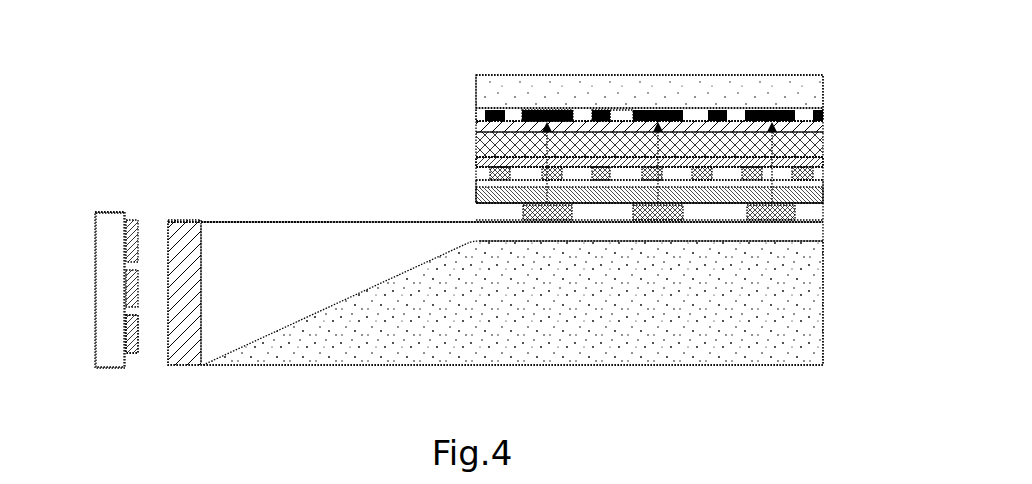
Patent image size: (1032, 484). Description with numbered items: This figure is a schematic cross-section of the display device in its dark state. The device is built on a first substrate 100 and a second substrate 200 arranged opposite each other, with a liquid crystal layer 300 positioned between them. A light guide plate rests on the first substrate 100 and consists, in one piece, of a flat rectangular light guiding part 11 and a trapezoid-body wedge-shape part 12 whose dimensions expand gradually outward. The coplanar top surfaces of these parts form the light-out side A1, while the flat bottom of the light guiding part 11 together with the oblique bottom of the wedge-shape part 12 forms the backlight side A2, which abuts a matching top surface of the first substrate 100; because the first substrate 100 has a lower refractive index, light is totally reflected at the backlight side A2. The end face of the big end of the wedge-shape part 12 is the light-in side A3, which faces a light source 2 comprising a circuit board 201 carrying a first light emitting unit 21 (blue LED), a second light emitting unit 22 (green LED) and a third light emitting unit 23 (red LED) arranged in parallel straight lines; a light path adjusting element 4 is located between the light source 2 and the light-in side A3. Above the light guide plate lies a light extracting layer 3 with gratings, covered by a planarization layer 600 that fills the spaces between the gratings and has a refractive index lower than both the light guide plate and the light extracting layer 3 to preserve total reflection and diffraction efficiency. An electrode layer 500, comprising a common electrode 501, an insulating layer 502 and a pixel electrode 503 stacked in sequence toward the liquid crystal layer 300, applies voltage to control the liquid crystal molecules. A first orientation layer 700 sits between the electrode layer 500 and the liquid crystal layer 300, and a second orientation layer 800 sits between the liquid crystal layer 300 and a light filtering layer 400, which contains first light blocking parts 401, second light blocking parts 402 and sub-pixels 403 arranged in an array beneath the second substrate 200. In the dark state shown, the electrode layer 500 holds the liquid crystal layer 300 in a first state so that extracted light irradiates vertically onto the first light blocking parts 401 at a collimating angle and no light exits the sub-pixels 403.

The first substrate 100 is at (618, 367).
The light guiding part 11 is at (812, 234).
The wedge-shape part 12 is at (313, 235).
The light source 2 is at (93, 208).
The circuit board 201 is at (112, 212).
The first light emitting unit 21 is at (134, 218).
The second light emitting unit 22 is at (122, 282).
The third light emitting unit 23 is at (135, 356).
The light path adjusting element 4 is at (195, 220).
The second substrate 200 is at (823, 84).
The second orientation layer 800 is at (823, 122).
The liquid crystal layer 300 is at (823, 143).
The first orientation layer 700 is at (823, 158).
The planarization layer 600 is at (823, 205).
The electrode layer 500 is at (412, 190).
The common electrode 501 is at (476, 198).
The insulating layer 502 is at (476, 181).
The pixel electrode 503 is at (476, 162).
The light extracting layer 3 is at (797, 215).
The light filtering layer 400 is at (634, 42).
The first light blocking part 401 is at (625, 118).
The second light blocking part 402 is at (603, 108).
The sub-pixel 403 is at (580, 110).
The light-out side A1 is at (256, 220).
The backlight side A2 is at (628, 245).
The light-in side A3 is at (201, 268).